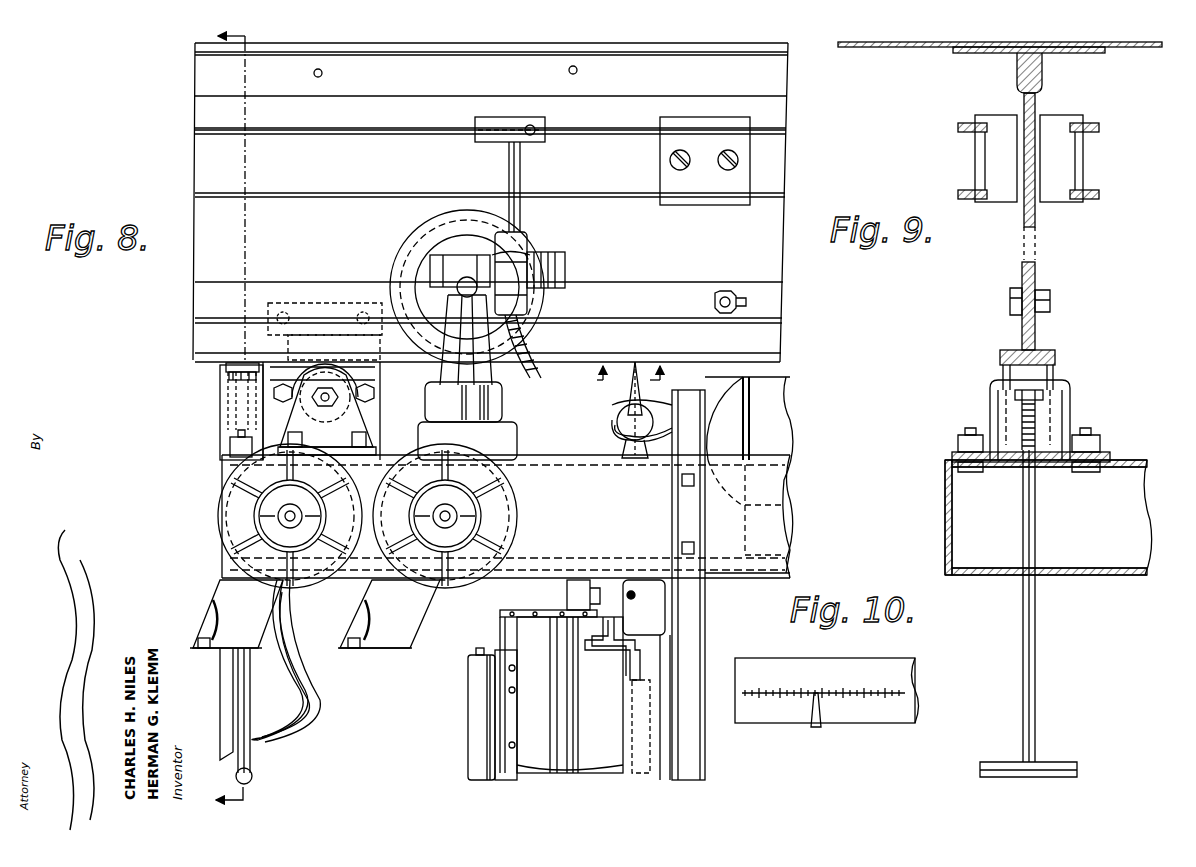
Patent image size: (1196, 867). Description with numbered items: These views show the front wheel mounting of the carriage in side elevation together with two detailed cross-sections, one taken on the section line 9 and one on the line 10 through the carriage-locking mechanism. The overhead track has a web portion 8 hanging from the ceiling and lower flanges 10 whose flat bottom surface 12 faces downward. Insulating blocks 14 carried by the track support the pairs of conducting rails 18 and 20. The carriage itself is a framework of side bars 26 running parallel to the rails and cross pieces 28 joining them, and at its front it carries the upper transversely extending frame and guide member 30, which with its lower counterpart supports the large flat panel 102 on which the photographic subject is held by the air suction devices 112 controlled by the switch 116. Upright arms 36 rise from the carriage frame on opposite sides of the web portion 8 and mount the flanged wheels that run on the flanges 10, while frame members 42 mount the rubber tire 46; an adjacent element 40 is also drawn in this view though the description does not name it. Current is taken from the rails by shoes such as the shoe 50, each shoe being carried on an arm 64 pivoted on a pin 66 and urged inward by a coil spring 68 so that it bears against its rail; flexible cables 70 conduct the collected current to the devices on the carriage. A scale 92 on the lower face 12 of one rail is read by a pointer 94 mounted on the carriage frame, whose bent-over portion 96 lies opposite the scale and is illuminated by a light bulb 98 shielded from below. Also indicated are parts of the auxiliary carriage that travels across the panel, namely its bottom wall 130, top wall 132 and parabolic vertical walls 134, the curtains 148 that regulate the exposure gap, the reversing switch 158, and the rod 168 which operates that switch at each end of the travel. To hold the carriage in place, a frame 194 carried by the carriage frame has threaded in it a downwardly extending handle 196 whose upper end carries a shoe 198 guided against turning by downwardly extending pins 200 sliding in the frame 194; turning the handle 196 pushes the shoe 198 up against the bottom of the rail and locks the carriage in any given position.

In FIG. 8, the web portion 8 is at (790, 209).
In FIG. 8, the section line 9— 9 is at (240, 420).
In FIG. 8, the lower flanges 10 is at (803, 358).
In FIG. 9, the flat bottom surface 12 is at (1000, 151).
In FIG. 10, the flat bottom surface 12 is at (876, 712).
In FIG. 8, the insulating blocks 14 is at (722, 192).
In FIG. 9, the insulating blocks 14 is at (1062, 128).
In FIG. 8, the conducting rails 18 is at (612, 150).
In FIG. 9, the conducting rails 18 is at (966, 187).
In FIG. 9, the conducting rails 20 is at (1090, 135).
In FIG. 8, the side bars 26 is at (566, 463).
In FIG. 10, the side bars 26 is at (940, 508).
In FIG. 10, the cross pieces 28 is at (1094, 522).
In FIG. 8, the upper frame and guide member 30 is at (616, 626).
In FIG. 8, the upright arms 36 is at (405, 262).
In FIG. 8, the block 40 is at (235, 441).
In FIG. 8, the frame members 42 is at (360, 412).
In FIG. 8, the rubber tire 46 is at (374, 380).
In FIG. 8, the shoe 50 is at (519, 118).
In FIG. 8, the arm 64 is at (522, 215).
In FIG. 8, the pin 66 is at (566, 271).
In FIG. 8, the coil spring 68 is at (532, 252).
In FIG. 8, the flexible cables 70 is at (538, 352).
In FIG. 10, the scale 92 is at (835, 690).
In FIG. 8, the pointer 94 is at (618, 412).
In FIG. 8, the bent-over portion 96 is at (639, 365).
In FIG. 10, the bent-over portion 96 is at (812, 702).
In FIG. 8, the light bulb 98 is at (622, 422).
In FIG. 8, the panel 102 is at (677, 782).
In FIG. 8, the air suction devices 112 is at (775, 408).
In FIG. 8, the switch 116 is at (318, 578).
In FIG. 8, the bottom wall 130 is at (645, 614).
In FIG. 8, the top wall 132 is at (522, 612).
In FIG. 8, the vertical walls 134 is at (607, 762).
In FIG. 8, the curtains 148 is at (468, 752).
In FIG. 8, the reversing switch 158 is at (580, 608).
In FIG. 8, the rod 168 is at (668, 592).
In FIG. 8, the frame 194 is at (228, 440).
In FIG. 10, the frame 194 is at (1068, 400).
In FIG. 8, the handle 196 is at (257, 745).
In FIG. 10, the handle 196 is at (1032, 680).
In FIG. 8, the shoe 198 is at (218, 368).
In FIG. 10, the shoe 198 is at (1048, 372).
In FIG. 8, the pins 200 is at (225, 388).
In FIG. 10, the pins 200 is at (1052, 392).